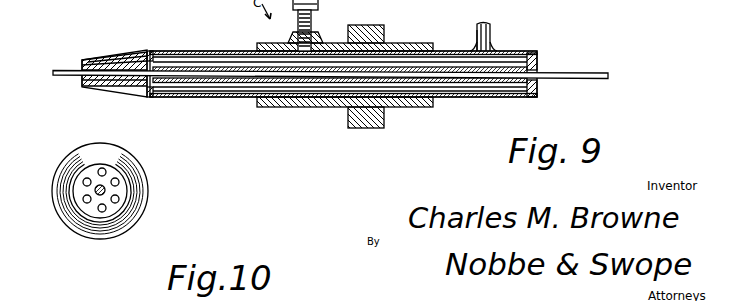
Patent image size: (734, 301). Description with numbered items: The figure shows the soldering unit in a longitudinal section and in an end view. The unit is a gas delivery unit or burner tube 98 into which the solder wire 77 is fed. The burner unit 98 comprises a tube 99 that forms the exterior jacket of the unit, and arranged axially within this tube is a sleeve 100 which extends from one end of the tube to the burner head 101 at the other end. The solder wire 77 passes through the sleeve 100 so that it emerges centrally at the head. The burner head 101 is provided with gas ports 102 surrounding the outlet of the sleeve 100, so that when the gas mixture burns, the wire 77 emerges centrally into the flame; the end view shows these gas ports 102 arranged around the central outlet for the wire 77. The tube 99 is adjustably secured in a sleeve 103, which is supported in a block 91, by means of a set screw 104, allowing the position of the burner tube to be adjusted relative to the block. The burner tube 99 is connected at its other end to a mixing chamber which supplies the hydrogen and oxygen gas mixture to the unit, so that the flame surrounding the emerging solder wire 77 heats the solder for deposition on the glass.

In FIG. 9, the solder wire 77 is at (62, 71).
In FIG. 10, the solder wire 77 is at (98, 189).
In FIG. 9, the block 91 is at (365, 43).
In FIG. 9, the gas delivery unit or burner tube 98 is at (197, 50).
In FIG. 10, the gas delivery unit or burner tube 98 is at (90, 155).
In FIG. 9, the tube 99 is at (160, 55).
In FIG. 9, the sleeve 100 is at (226, 66).
In FIG. 9, the burner head 101 is at (121, 58).
In FIG. 10, the burner head 101 is at (112, 155).
In FIG. 9, the gas ports 102 is at (102, 63).
In FIG. 10, the gas ports 102 is at (119, 198).
In FIG. 9, the sleeve 103 is at (396, 47).
In FIG. 9, the set screw 104 is at (318, 5).